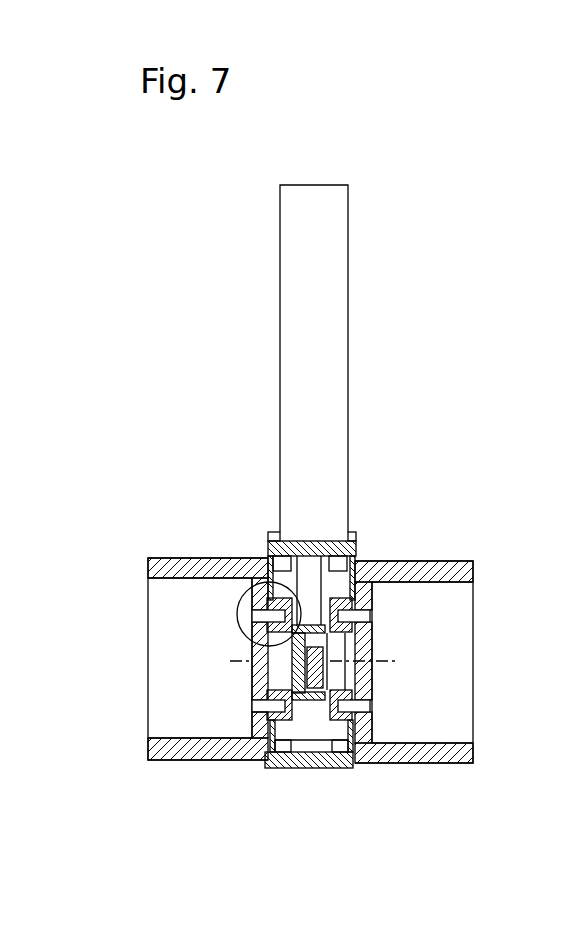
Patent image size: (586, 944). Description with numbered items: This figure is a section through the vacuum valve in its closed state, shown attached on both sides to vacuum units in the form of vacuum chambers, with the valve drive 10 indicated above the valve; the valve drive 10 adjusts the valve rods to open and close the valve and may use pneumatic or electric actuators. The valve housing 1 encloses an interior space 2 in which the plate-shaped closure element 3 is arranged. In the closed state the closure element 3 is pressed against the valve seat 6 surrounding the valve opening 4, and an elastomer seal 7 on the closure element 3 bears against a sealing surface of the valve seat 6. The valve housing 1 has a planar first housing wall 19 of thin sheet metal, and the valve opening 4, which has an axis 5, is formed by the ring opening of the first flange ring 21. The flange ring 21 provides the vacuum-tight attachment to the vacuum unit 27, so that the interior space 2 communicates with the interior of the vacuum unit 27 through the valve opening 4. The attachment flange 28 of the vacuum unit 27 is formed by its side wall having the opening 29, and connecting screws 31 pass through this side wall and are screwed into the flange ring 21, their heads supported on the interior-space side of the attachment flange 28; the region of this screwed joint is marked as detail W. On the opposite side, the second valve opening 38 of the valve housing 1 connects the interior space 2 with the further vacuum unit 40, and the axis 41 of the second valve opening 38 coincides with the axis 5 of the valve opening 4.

The valve housing 1 is at (282, 782).
The interior space 2 is at (356, 560).
The closure element 3 is at (268, 650).
The valve opening 4 is at (278, 680).
The axis 5 is at (262, 658).
The valve seat 6 is at (292, 640).
The elastomer seal 7 is at (292, 690).
The valve drive 10 is at (372, 379).
The first housing wall 19 is at (265, 762).
The first flange ring 21 is at (270, 560).
The vacuum unit 27 is at (171, 542).
The attachment flange 28 is at (268, 722).
The opening 29 is at (258, 662).
The connecting screws 31 is at (258, 740).
The second valve opening 38 is at (345, 673).
The further vacuum unit 40 is at (446, 548).
The axis of the second valve opening 41 is at (393, 662).
The detail region W is at (280, 633).